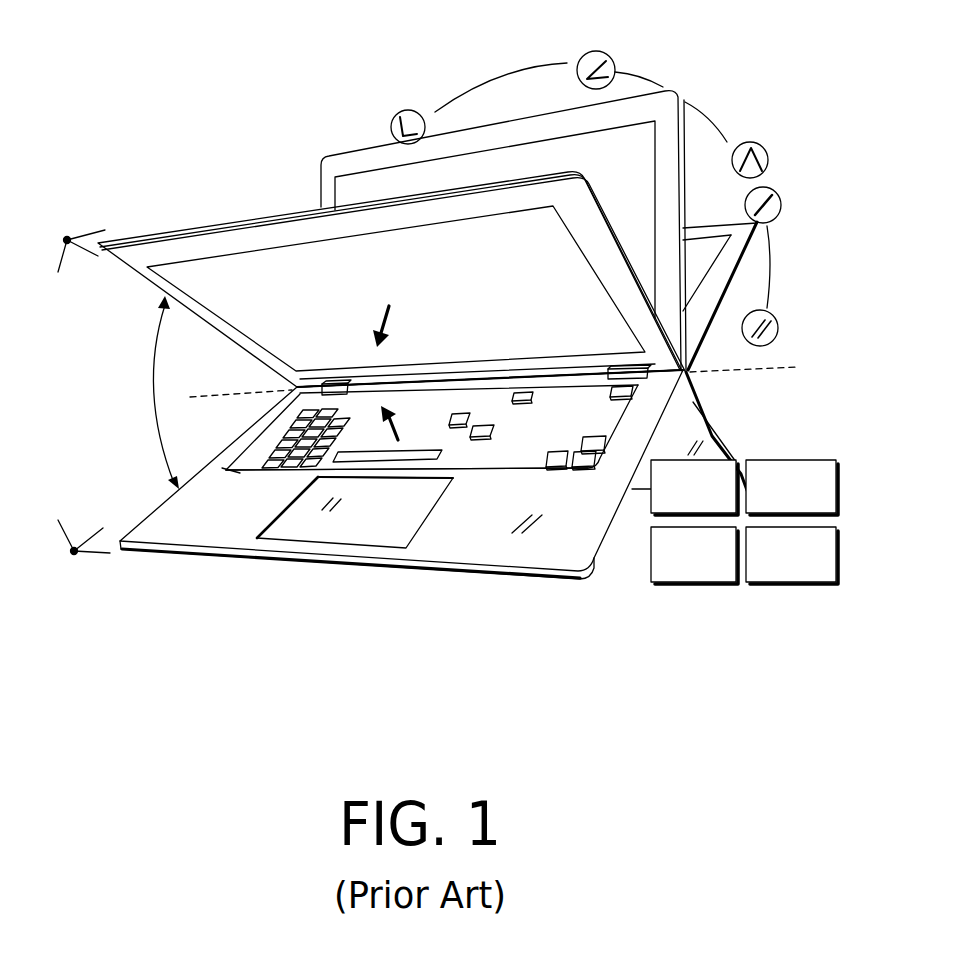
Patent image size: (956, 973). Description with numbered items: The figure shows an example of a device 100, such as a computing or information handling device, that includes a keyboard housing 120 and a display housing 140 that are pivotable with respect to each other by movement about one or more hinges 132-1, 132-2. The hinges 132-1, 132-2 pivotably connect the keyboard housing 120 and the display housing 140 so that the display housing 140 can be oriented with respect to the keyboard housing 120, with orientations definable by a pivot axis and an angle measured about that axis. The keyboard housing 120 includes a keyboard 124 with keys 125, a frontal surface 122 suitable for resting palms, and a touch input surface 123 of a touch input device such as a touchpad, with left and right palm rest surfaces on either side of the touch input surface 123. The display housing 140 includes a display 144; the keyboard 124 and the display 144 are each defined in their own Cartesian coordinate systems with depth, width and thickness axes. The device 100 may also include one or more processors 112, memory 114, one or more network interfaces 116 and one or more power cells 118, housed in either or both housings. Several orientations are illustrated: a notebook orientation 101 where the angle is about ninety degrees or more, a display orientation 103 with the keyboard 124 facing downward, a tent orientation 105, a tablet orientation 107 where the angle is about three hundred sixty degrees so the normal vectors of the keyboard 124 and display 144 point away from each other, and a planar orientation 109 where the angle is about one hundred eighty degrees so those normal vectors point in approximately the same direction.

The device 100 is at (248, 130).
The orientation 101 is at (394, 111).
The orientation 103 is at (581, 57).
The orientation 105 is at (768, 148).
The orientation 107 is at (776, 315).
The orientation 109 is at (780, 200).
The processors 112 is at (680, 506).
The memory 114 is at (778, 506).
The network interfaces 116 is at (680, 574).
The power cells 118 is at (778, 574).
The keyboard housing 120 is at (186, 562).
The frontal surface 122 is at (500, 515).
The touch input surface 123 is at (389, 523).
The keyboard 124 is at (568, 437).
The keys 125 is at (553, 458).
The hinge 132-1 is at (340, 383).
The hinge 132-2 is at (612, 368).
The display housing 140 is at (180, 232).
The display 144 is at (513, 290).